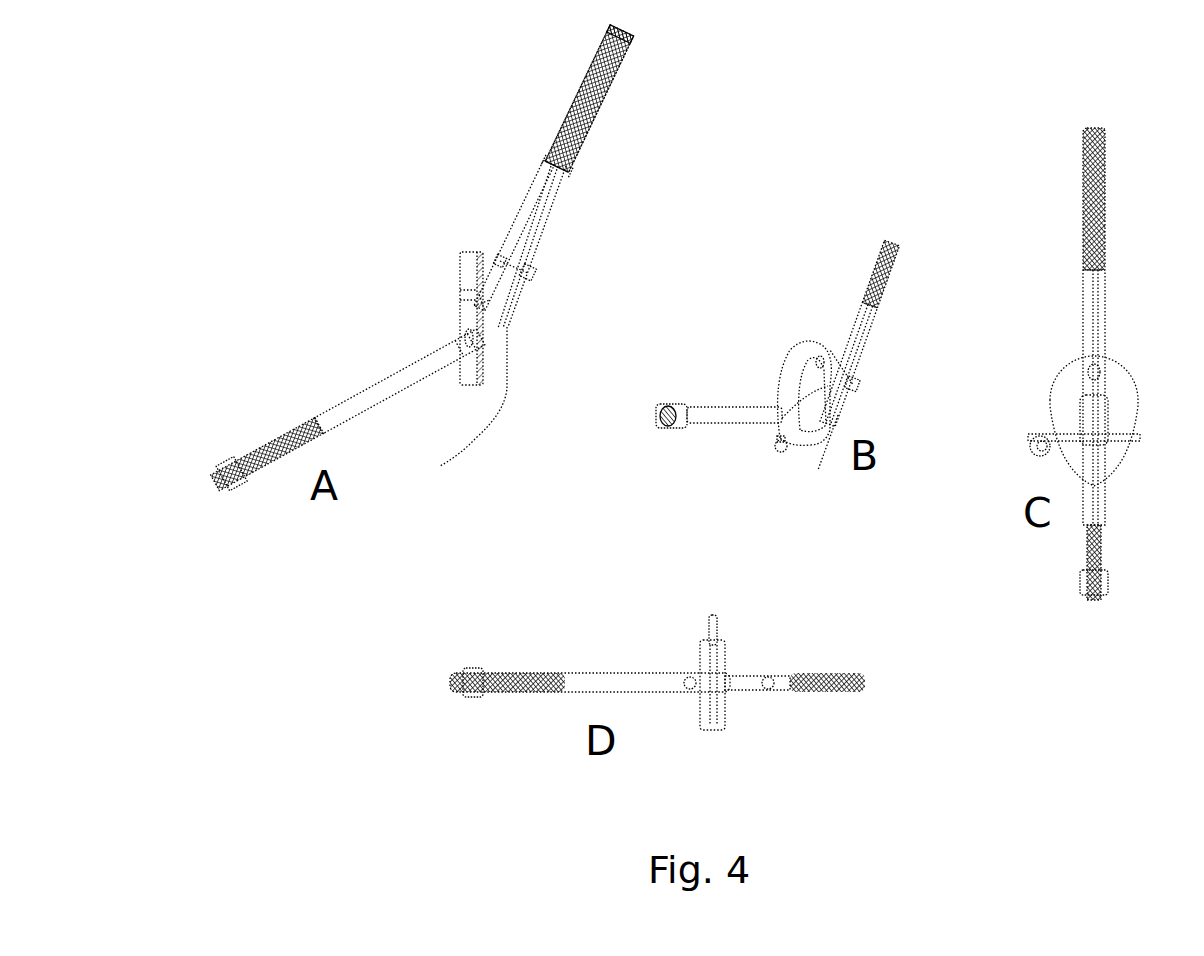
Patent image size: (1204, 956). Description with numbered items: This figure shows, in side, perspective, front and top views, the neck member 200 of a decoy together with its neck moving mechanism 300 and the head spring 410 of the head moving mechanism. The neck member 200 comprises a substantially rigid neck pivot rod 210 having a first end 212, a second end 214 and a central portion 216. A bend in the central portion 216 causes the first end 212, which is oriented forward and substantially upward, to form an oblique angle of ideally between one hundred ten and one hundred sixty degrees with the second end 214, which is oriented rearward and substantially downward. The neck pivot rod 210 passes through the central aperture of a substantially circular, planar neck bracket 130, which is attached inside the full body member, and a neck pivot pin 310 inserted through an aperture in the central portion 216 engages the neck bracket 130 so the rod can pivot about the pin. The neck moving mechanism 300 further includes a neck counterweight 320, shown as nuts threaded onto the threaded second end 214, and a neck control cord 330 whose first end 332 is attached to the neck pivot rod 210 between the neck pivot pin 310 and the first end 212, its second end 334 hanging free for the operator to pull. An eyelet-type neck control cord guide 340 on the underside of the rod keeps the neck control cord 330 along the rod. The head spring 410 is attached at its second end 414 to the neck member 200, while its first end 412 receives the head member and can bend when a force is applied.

In FIG. 4A, the neck bracket 130 is at (464, 264).
In FIG. 4B, the neck bracket 130 is at (805, 393).
In FIG. 4C, the neck bracket 130 is at (1094, 421).
In FIG. 4D, the neck bracket 130 is at (712, 685).
In FIG. 4A, the neck member 200 is at (396, 241).
In FIG. 4A, the neck pivot rod 210 is at (399, 381).
In FIG. 4B, the neck pivot rod 210 is at (757, 404).
In FIG. 4C, the neck pivot rod 210 is at (1095, 397).
In FIG. 4D, the neck pivot rod 210 is at (590, 682).
In FIG. 4A, the first end 212 is at (514, 235).
In FIG. 4A, the second end 214 is at (267, 454).
In FIG. 4A, the central portion 216 is at (482, 303).
In FIG. 4A, the neck moving mechanism 300 is at (562, 231).
In FIG. 4B, the neck pivot pin 310 is at (781, 444).
In FIG. 4C, the neck pivot pin 310 is at (1084, 445).
In FIG. 4D, the neck pivot pin 310 is at (712, 617).
In FIG. 4A, the neck counterweight 320 is at (231, 474).
In FIG. 4B, the neck counterweight 320 is at (671, 416).
In FIG. 4C, the neck counterweight 320 is at (1094, 582).
In FIG. 4D, the neck counterweight 320 is at (507, 682).
In FIG. 4A, the neck control cord 330 is at (532, 247).
In FIG. 4B, the neck control cord 330 is at (848, 364).
In FIG. 4C, the neck control cord 330 is at (1094, 397).
In FIG. 4D, the neck control cord 330 is at (757, 683).
In FIG. 4A, the first end 332 is at (587, 102).
In FIG. 4A, the second end 334 is at (446, 465).
In FIG. 4A, the neck control cord guide 340 is at (514, 267).
In FIG. 4B, the neck control cord guide 340 is at (843, 371).
In FIG. 4A, the head spring 410 is at (589, 98).
In FIG. 4B, the head spring 410 is at (880, 274).
In FIG. 4C, the head spring 410 is at (1094, 364).
In FIG. 4D, the head spring 410 is at (827, 682).
In FIG. 4A, the first end 412 is at (620, 34).
In FIG. 4A, the second end 414 is at (557, 167).